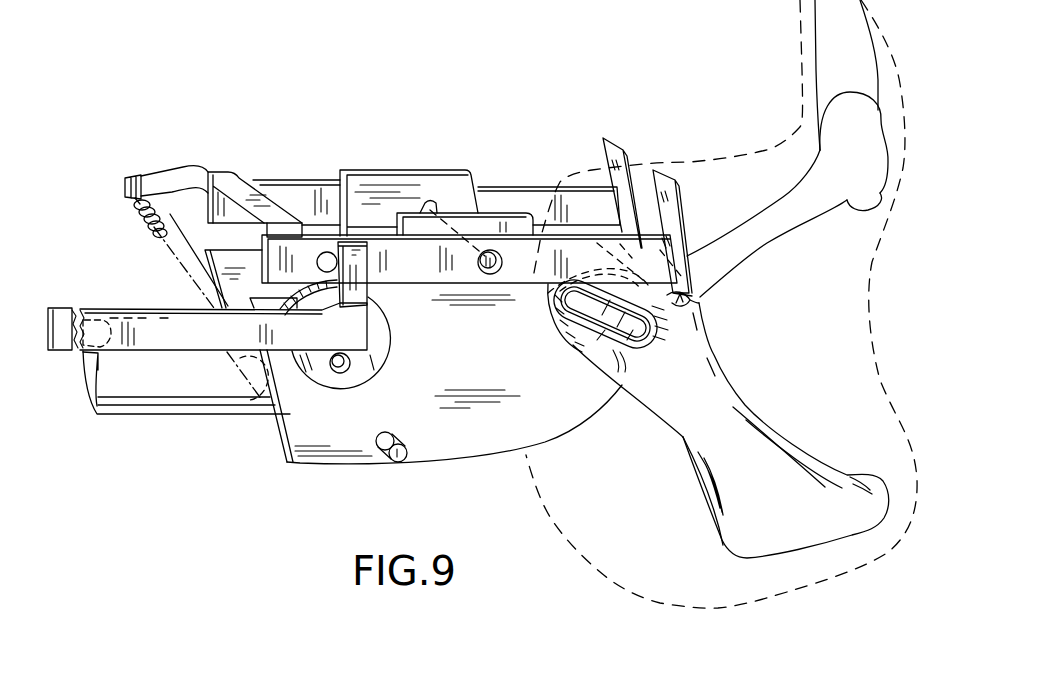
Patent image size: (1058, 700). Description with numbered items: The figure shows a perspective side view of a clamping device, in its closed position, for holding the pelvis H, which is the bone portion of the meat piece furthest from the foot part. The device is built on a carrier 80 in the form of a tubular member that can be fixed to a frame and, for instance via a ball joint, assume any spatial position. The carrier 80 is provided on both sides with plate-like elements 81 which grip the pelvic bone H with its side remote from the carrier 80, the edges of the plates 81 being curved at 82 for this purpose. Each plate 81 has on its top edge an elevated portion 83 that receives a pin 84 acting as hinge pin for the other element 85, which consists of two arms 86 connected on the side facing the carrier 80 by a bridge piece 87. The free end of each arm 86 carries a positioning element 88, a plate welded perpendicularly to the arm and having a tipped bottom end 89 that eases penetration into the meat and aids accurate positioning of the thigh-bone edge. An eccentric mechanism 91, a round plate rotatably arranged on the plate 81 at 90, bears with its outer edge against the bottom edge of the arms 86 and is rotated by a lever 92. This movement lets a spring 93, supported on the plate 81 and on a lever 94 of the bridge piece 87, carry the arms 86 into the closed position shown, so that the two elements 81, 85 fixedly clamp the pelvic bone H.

The carrier 80 is at (167, 406).
The plate-like element 81 is at (325, 442).
The curved edge 82 is at (575, 342).
The elevated portion 83 is at (507, 211).
The pin 84 is at (437, 190).
The element 85 is at (309, 172).
The arm 86 is at (587, 223).
The bridge piece 87 is at (247, 187).
The positioning element 88 is at (617, 145).
The tipped bottom end 89 is at (697, 298).
The rotatable arrangement 90 is at (341, 371).
The eccentric mechanism 91 is at (387, 356).
The lever 92 is at (63, 309).
The spring 93 is at (158, 238).
The lever 94 is at (178, 178).
The pelvis H is at (730, 417).